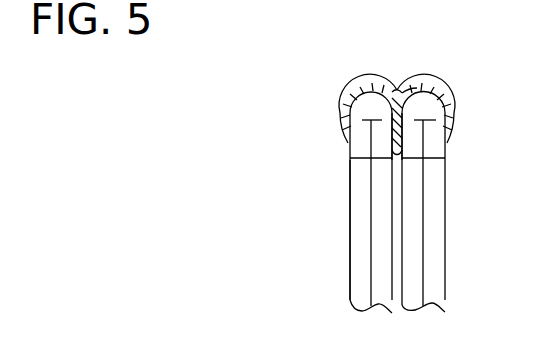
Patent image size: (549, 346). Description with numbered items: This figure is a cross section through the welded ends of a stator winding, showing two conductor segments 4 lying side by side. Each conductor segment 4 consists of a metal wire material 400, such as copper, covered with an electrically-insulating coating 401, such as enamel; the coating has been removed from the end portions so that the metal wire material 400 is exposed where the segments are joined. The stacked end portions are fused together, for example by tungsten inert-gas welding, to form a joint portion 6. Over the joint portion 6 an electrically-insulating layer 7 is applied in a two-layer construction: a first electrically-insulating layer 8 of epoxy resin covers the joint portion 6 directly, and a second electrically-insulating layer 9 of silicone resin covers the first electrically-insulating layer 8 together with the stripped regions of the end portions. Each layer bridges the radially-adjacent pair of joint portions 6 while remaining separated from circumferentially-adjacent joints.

The conductor segment 4 is at (348, 203).
The joint portion 6 is at (370, 103).
The electrically-insulating layer 7 is at (441, 23).
The first electrically-insulating layer 8 is at (400, 90).
The second electrically-insulating layer 9 is at (413, 86).
The metal wire material 400 is at (348, 150).
The electrically-insulating coating 401 is at (350, 233).